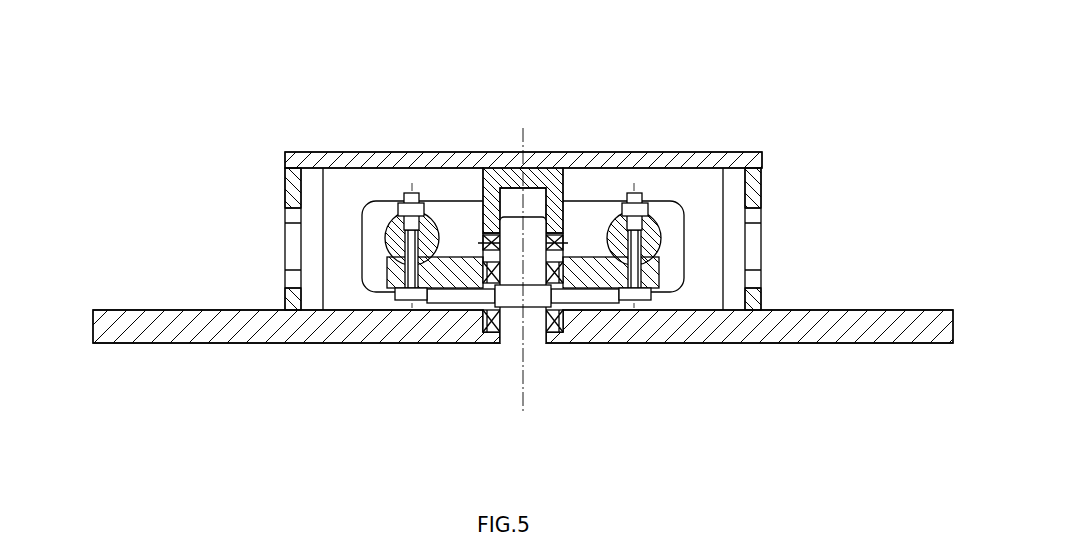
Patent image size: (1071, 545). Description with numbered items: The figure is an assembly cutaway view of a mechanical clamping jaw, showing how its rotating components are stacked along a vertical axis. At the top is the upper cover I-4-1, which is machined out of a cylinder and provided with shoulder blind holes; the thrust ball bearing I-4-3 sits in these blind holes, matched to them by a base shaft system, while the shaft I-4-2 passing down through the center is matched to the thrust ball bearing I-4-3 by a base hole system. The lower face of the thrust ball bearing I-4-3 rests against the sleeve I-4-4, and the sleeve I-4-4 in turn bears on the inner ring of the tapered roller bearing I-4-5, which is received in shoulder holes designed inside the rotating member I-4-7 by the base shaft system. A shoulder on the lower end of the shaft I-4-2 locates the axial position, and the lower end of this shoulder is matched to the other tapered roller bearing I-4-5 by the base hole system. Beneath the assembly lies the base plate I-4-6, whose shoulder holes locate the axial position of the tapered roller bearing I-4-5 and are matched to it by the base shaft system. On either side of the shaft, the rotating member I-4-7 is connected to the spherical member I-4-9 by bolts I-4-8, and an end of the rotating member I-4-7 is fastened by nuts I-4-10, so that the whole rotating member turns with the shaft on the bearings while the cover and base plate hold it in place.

The upper cover I-4-1 is at (523, 153).
The shaft I-4-2 is at (523, 236).
The thrust ball bearing I-4-3 is at (485, 237).
The sleeve I-4-4 is at (410, 212).
The tapered roller bearing I-4-5 is at (486, 273).
The base plate I-4-6 is at (468, 321).
The rotating member I-4-7 is at (585, 273).
The bolts I-4-8 is at (633, 267).
The spherical member I-4-9 is at (648, 237).
The nuts I-4-10 is at (635, 207).